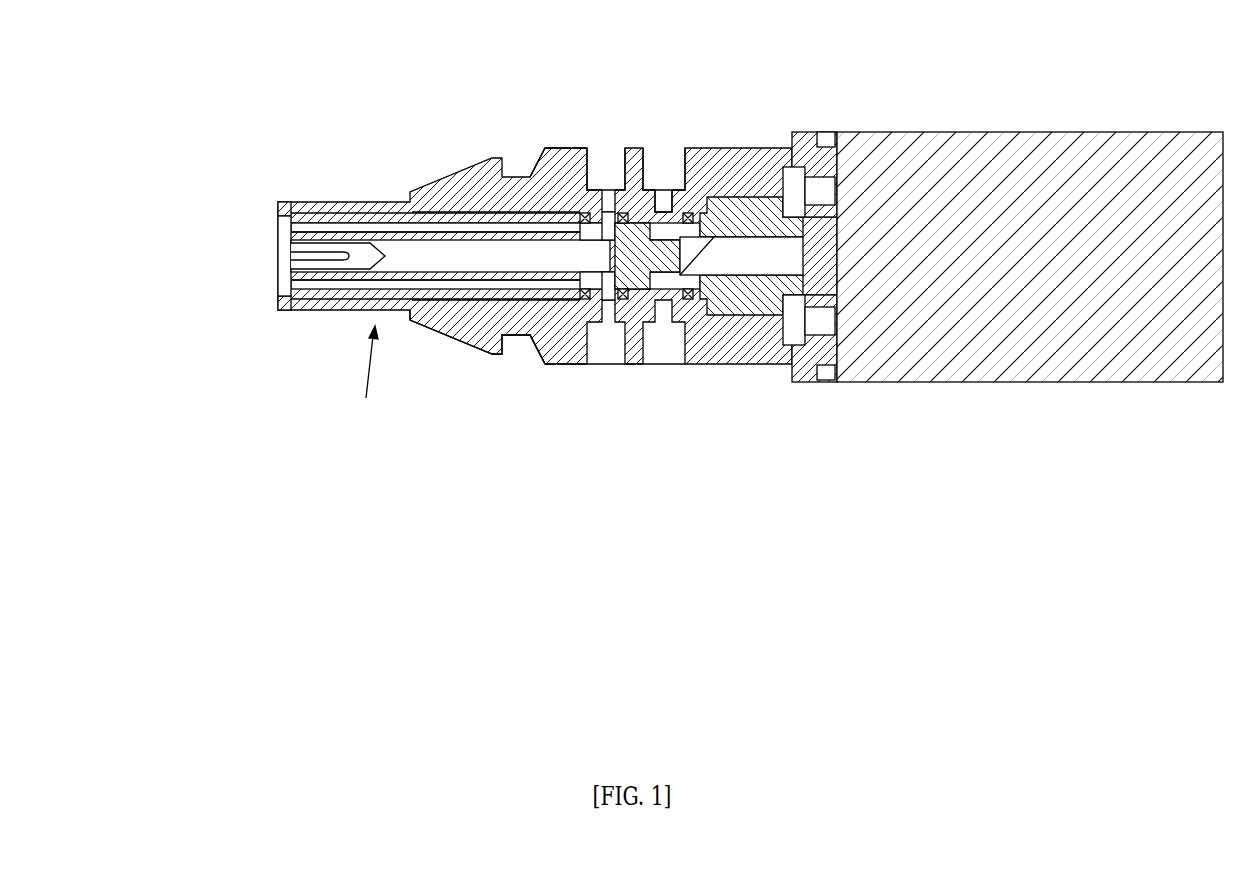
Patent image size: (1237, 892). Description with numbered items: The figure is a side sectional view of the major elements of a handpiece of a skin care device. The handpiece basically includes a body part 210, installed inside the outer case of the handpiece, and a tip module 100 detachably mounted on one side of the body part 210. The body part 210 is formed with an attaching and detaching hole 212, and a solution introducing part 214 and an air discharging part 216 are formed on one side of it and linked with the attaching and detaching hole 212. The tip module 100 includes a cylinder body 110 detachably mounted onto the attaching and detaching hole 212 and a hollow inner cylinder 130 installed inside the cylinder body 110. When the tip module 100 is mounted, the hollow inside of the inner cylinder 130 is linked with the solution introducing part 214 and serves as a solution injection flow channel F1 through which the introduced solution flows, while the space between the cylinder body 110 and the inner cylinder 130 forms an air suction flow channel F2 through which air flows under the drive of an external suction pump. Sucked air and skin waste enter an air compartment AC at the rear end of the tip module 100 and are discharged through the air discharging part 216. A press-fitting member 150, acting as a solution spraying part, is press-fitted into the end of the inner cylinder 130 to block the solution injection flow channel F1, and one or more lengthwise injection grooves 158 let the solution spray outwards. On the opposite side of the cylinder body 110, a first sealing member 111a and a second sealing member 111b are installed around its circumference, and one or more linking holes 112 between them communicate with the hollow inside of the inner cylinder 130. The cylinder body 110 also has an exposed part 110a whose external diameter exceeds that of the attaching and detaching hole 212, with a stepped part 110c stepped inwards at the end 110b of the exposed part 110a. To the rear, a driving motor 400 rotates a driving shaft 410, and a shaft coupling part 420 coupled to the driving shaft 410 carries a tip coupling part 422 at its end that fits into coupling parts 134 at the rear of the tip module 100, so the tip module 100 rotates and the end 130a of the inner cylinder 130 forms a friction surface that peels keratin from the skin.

The tip module 100 is at (368, 378).
The cylinder body 110 is at (477, 216).
The exposed part 110a is at (306, 201).
The end of the exposed part 110b is at (289, 311).
The stepped part 110c is at (278, 297).
The first sealing member 111a is at (532, 340).
The second sealing member 111b is at (583, 364).
The linking hole 112 is at (601, 210).
The inner cylinder 130 is at (447, 279).
The end of the inner cylinder 130a is at (290, 232).
The coupling part 134 is at (633, 300).
The press-fitting member 150 is at (348, 234).
The injection groove 158 is at (293, 232).
The body part 210 is at (570, 364).
The attaching and detaching hole 212 is at (540, 177).
The solution introducing part 214 is at (611, 203).
The air discharging part 216 is at (702, 200).
The driving motor 400 is at (998, 383).
The driving shaft 410 is at (800, 345).
The shaft coupling part 420 is at (746, 298).
The tip coupling part 422 is at (601, 300).
The air compartment AC is at (660, 205).
The solution injection flow channel F1 is at (440, 252).
The air suction flow channel F2 is at (394, 222).